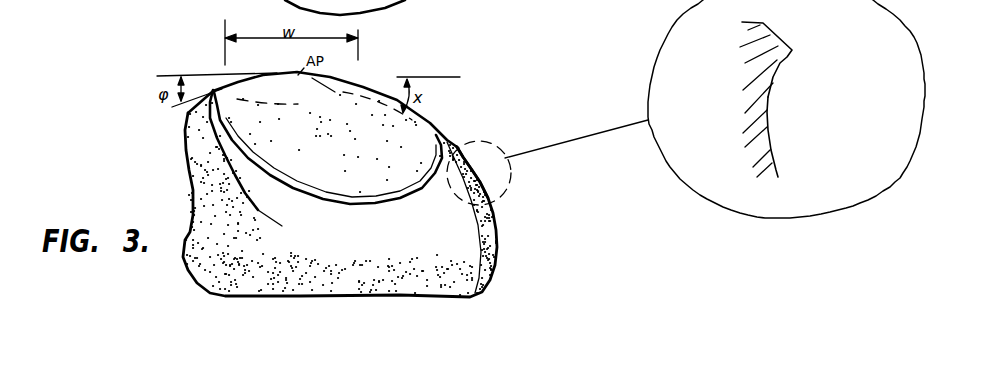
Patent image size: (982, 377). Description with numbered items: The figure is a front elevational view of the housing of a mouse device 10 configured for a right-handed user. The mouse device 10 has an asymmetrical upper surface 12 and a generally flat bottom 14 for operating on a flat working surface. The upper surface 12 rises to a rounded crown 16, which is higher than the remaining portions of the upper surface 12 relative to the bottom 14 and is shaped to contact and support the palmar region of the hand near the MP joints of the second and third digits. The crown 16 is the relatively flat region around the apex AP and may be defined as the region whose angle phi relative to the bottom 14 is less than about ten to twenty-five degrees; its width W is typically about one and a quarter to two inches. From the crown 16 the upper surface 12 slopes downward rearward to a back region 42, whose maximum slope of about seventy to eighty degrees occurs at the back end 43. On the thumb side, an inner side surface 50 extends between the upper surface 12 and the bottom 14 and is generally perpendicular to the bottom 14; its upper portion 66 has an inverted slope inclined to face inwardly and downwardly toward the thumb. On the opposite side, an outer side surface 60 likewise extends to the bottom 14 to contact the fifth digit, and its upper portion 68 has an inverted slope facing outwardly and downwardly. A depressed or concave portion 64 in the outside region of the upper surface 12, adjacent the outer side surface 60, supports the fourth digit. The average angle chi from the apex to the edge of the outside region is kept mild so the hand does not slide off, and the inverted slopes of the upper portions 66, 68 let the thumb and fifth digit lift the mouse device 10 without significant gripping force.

The mouse device 10 is at (568, 68).
The upper surface 12 is at (378, 90).
The bottom 14 is at (447, 298).
The crown 16 is at (303, 96).
The back region 42 is at (340, 168).
The back end 43 is at (350, 15).
The inner side surface 50 is at (193, 195).
The outer side surface 60 is at (497, 230).
The depressed portion 64 is at (451, 139).
The upper portion of inner side surface 66 is at (188, 150).
The upper portion of outer side surface 68 is at (480, 190).